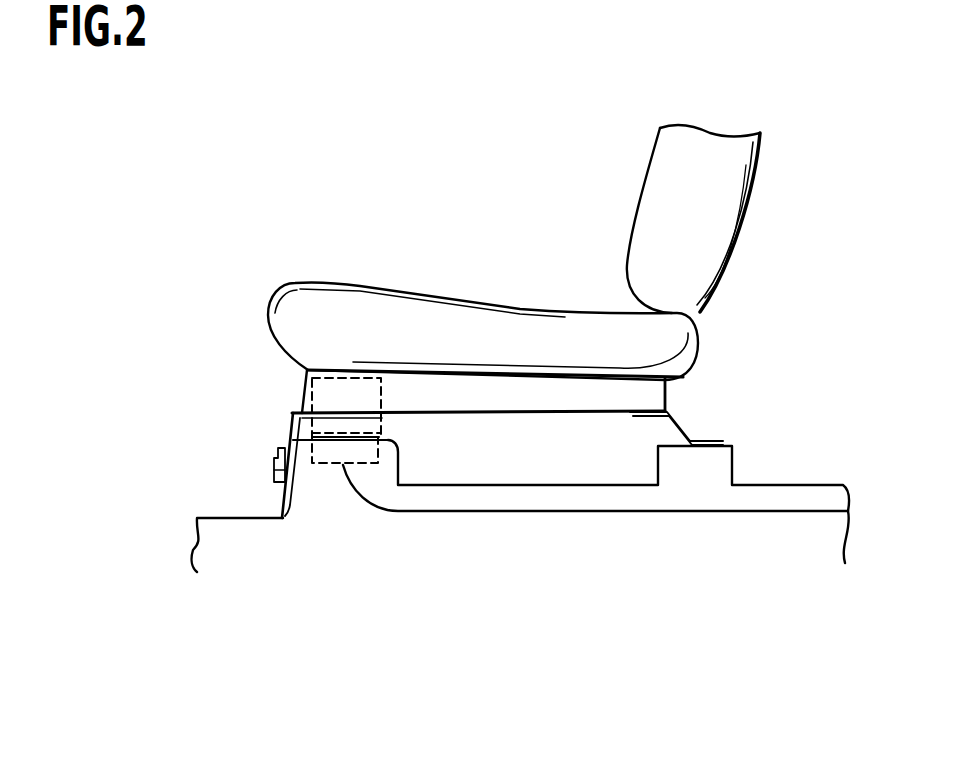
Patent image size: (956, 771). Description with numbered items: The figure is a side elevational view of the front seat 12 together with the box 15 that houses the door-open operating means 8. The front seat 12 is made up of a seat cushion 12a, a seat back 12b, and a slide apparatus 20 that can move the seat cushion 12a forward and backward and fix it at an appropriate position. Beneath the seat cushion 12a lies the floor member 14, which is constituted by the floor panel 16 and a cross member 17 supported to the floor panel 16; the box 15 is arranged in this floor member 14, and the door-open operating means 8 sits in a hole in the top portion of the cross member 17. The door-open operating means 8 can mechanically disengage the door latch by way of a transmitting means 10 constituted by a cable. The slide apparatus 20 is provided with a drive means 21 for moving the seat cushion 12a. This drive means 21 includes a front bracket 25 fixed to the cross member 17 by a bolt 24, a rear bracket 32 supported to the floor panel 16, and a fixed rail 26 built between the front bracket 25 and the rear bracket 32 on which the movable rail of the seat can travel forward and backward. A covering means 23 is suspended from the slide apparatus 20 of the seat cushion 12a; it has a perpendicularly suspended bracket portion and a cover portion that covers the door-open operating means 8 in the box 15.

The front seat 12 is at (588, 167).
The seat cushion 12a is at (447, 297).
The seat back 12b is at (653, 190).
The drive means 21 is at (667, 392).
The fixed rail 26 is at (483, 400).
The slide apparatus 20 is at (580, 413).
The rear bracket 32 is at (687, 423).
The transmitting means 10 is at (485, 513).
The bolt 24 is at (273, 452).
The cross member 17 is at (278, 503).
The floor panel 16 is at (232, 517).
The floor member 14 is at (240, 455).
The front bracket 25 is at (277, 427).
The covering means 23 is at (323, 396).
The door-open operating means 8 is at (330, 463).
The box 15 is at (345, 450).